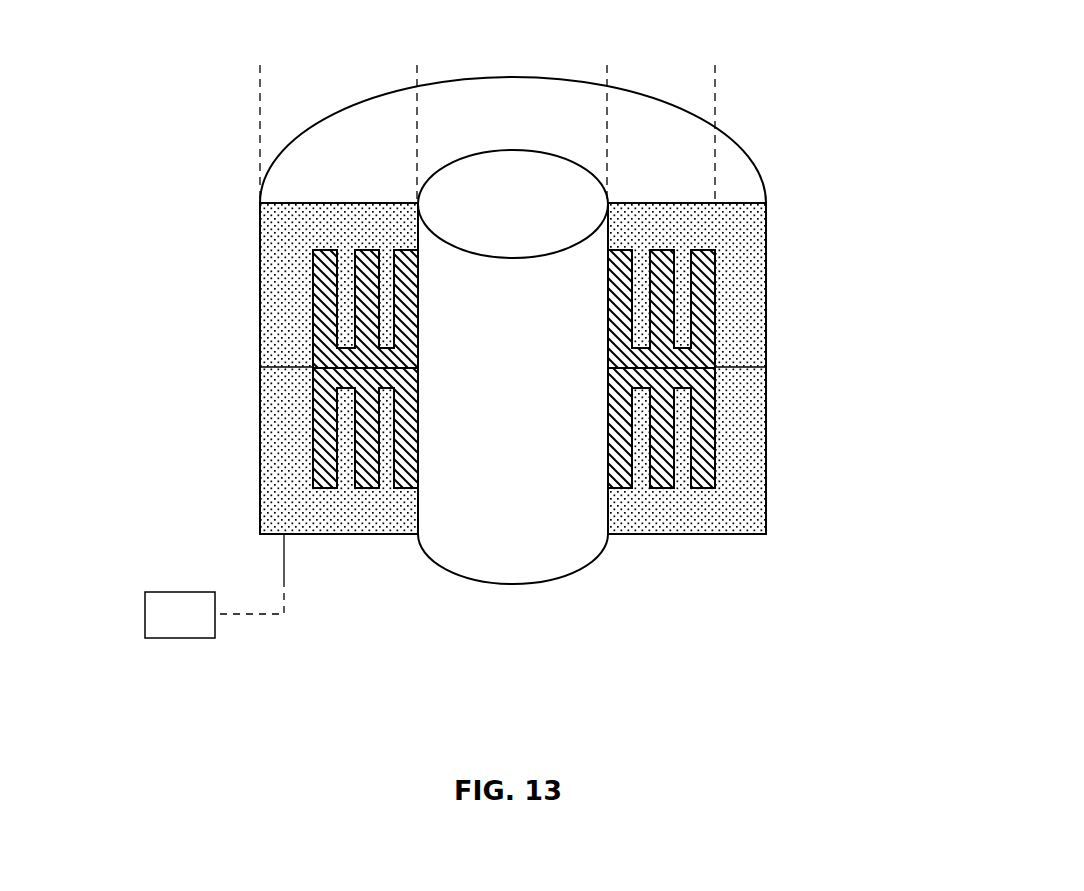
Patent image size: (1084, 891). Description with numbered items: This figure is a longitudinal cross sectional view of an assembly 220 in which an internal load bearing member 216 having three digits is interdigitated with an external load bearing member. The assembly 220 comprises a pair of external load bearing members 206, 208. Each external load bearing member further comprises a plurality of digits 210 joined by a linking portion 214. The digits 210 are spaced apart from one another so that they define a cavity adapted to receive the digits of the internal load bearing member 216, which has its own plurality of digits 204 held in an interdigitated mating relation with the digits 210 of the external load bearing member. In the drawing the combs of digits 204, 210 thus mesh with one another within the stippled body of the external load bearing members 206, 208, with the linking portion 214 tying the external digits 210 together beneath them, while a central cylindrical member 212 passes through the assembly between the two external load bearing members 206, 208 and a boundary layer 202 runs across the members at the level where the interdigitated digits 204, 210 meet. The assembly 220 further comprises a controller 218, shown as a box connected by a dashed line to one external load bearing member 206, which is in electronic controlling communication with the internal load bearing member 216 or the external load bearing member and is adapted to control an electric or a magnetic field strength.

The insulating layer 202 is at (313, 367).
The digits 204 is at (409, 478).
The external load bearing member 206 is at (417, 66).
The external load bearing member 208 is at (610, 545).
The digits 210 is at (643, 453).
The central conductor 212 is at (498, 535).
The linking portion 214 is at (627, 510).
The internal load bearing member 216 is at (607, 66).
The controller 218 is at (214, 586).
The assembly 220 is at (203, 181).